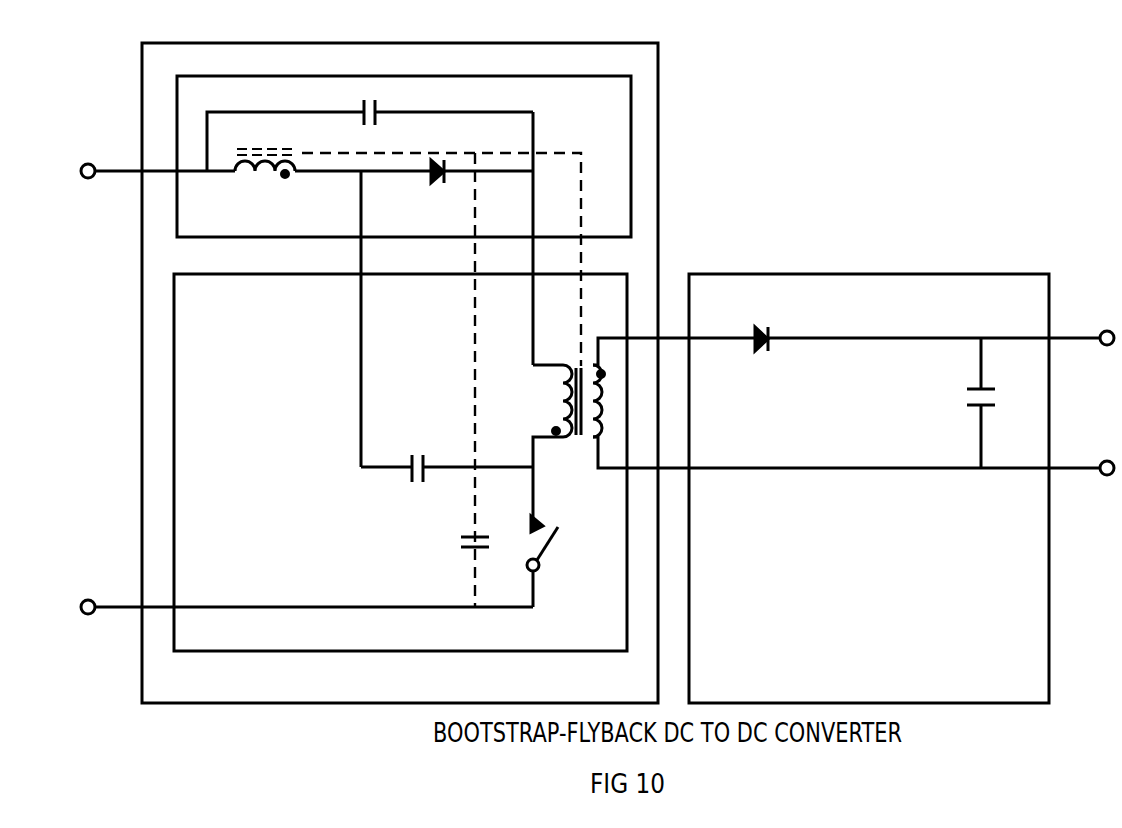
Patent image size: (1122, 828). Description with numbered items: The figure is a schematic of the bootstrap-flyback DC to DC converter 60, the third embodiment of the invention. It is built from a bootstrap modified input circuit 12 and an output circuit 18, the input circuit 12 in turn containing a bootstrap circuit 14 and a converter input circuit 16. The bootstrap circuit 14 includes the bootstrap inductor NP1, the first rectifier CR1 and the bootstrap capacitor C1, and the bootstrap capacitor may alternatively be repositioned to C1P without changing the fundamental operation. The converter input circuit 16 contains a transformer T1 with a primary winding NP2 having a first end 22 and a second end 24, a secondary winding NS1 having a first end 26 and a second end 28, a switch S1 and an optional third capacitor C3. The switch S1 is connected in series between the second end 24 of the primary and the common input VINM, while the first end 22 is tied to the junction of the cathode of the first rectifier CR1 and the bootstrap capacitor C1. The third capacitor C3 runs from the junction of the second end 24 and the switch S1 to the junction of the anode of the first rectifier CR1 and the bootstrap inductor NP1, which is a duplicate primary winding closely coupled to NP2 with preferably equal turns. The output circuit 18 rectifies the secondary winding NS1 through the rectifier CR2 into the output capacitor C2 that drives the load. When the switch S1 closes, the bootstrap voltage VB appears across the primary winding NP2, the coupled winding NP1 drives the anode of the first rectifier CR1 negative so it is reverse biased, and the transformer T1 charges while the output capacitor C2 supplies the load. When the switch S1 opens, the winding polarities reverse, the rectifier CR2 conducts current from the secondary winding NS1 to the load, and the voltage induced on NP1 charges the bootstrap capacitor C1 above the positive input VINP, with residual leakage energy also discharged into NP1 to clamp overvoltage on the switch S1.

The bootstrap modified input circuit 12 is at (400, 373).
The bootstrap circuit 14 is at (404, 156).
The converter input circuit 16 is at (400, 462).
The output circuit 18 is at (869, 488).
The first end of primary winding 22 is at (549, 351).
The second end of primary winding 24 is at (549, 457).
The first end of secondary winding 26 is at (673, 335).
The second end of secondary winding 28 is at (613, 413).
The bootstrap-flyback DC to DC converter 60 is at (832, 147).
The transformer T1 is at (793, 424).
The bootstrap inductor NP1 is at (265, 179).
The primary winding NP2 is at (529, 401).
The secondary winding NS1 is at (595, 454).
The bootstrap capacitor C1 is at (370, 135).
The repositioned bootstrap capacitor C1P is at (455, 548).
The output capacitor C2 is at (956, 403).
The third capacitor C3 is at (447, 454).
The first rectifier CR1 is at (430, 192).
The rectifier CR2 is at (918, 323).
The switch S1 is at (557, 537).
The bootstrap voltage VB is at (450, 356).
The positive input voltage terminal VINP is at (144, 144).
The common input voltage terminal VINM is at (293, 583).